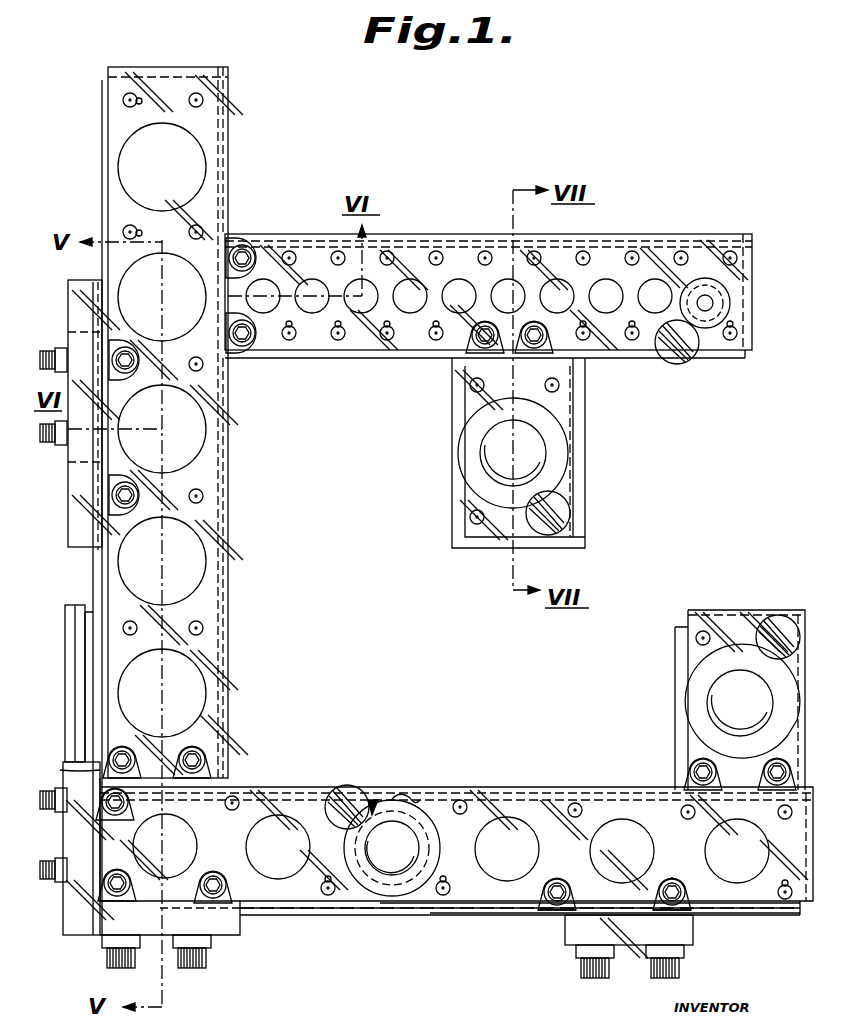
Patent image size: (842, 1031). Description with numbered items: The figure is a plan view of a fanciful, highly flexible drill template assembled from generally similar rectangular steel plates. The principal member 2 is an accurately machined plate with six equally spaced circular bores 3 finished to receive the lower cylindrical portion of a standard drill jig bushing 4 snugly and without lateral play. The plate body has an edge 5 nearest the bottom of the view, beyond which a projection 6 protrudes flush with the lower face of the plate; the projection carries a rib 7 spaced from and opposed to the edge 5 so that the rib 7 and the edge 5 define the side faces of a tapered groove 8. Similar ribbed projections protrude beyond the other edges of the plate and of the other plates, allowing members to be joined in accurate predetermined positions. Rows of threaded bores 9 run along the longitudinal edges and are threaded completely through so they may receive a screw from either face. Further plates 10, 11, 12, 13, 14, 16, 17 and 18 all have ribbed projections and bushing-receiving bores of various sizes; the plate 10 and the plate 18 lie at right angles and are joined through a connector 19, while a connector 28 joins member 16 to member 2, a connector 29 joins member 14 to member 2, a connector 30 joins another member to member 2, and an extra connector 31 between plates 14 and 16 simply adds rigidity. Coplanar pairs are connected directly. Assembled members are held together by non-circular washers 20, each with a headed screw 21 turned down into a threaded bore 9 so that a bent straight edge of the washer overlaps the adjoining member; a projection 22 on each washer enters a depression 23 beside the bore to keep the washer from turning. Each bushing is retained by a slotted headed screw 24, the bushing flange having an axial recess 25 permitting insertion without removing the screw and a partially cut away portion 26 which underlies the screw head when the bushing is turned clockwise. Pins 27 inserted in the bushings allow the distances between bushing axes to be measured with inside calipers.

The member 2 is at (483, 805).
The circular bores 3 is at (411, 280).
The drill jig bushing 4 is at (730, 303).
The edge 5 is at (372, 905).
The projection 6 is at (402, 907).
The rib 7 is at (440, 905).
The groove 8 is at (490, 900).
The threaded bores 9 is at (683, 257).
The plate 10 is at (205, 470).
The plate 11 is at (412, 345).
The plate 12 is at (563, 408).
The plate 13 is at (723, 632).
The plate 14 is at (250, 925).
The plate 16 is at (62, 770).
The plate 17 is at (72, 697).
The plate 18 is at (77, 465).
The connector 19 is at (82, 548).
The washer 20 is at (555, 912).
The headed screw 21 is at (720, 862).
The projection 22 is at (660, 882).
The depression 23 is at (672, 879).
The slotted headed screw 24 is at (682, 358).
The recess 25 is at (400, 805).
The partially cut away portion 26 is at (373, 800).
The pin 27 is at (542, 457).
The connector 28 is at (75, 865).
The connector 29 is at (175, 920).
The connector 30 is at (635, 935).
The connector 31 is at (93, 930).